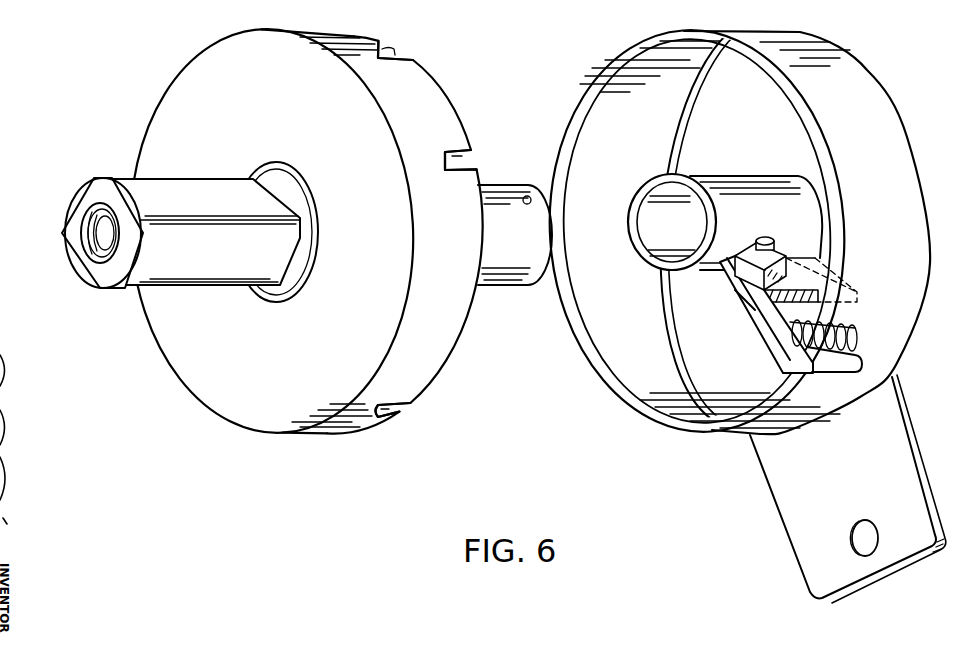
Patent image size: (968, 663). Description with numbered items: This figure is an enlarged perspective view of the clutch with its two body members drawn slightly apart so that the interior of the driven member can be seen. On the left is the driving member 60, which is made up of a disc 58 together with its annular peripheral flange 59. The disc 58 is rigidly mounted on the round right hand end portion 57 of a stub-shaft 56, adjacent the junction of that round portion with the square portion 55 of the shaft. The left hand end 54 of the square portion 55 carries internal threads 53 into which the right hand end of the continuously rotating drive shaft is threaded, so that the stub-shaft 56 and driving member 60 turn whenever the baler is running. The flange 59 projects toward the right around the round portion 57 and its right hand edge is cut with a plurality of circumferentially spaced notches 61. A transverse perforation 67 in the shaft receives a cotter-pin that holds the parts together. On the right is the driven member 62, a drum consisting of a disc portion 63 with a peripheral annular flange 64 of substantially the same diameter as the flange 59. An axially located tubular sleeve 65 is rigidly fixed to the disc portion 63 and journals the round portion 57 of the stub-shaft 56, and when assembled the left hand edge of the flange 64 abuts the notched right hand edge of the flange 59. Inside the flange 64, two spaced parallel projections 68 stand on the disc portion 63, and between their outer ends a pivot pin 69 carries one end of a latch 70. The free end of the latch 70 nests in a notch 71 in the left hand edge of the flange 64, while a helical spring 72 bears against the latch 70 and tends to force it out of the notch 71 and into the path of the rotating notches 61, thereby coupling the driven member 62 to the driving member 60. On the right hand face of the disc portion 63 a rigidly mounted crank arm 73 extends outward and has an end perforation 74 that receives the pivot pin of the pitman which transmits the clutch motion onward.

The internal threads 53 is at (86, 218).
The left hand end 54 is at (62, 238).
The square portion 55 is at (190, 182).
The stub-shaft 56 is at (163, 300).
The right hand end portion 57 is at (300, 178).
The disc 58 is at (200, 385).
The annular peripheral flange 59 is at (428, 295).
The driving member 60 is at (166, 75).
The notches 61 is at (398, 50).
The driven member 62 is at (884, 156).
The disc portion 63 is at (688, 130).
The peripheral annular flange 64 is at (801, 90).
The tubular sleeve 65 is at (665, 235).
The transverse perforation 67 is at (526, 196).
The projections 68 is at (835, 268).
The pivot pin 69 is at (774, 240).
The latch 70 is at (783, 355).
The notch 71 is at (863, 358).
The helical spring 72 is at (862, 322).
The crank arm 73 is at (790, 493).
The end perforation 74 is at (851, 539).